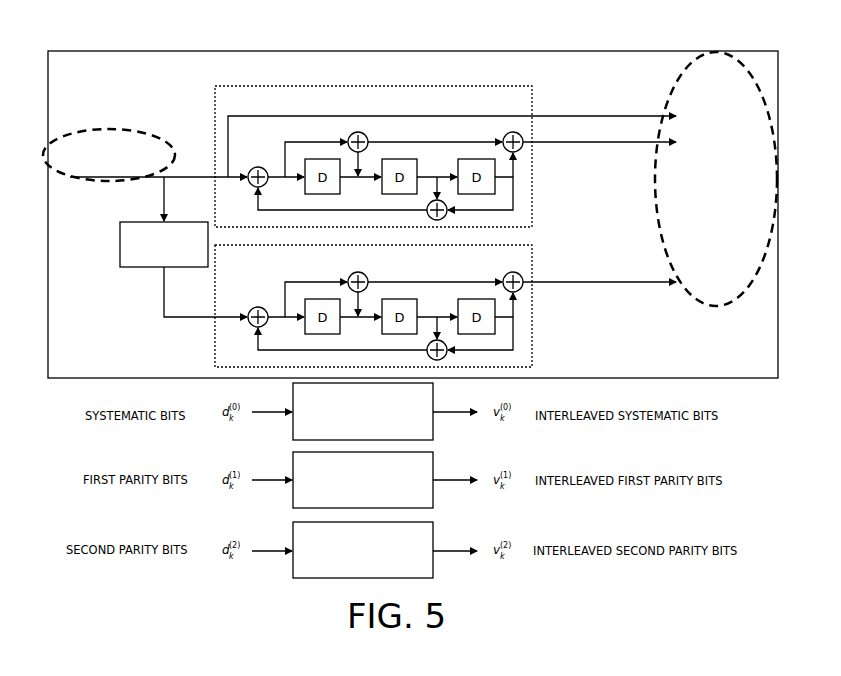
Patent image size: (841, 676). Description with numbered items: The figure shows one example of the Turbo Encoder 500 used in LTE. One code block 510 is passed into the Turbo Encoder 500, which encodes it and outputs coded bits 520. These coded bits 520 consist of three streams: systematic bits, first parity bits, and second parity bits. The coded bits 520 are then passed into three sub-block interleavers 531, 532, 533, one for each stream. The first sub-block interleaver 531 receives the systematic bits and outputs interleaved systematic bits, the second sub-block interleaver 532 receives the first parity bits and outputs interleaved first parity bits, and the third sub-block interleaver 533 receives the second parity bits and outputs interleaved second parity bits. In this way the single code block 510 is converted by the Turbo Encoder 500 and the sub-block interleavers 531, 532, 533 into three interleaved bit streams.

The Turbo Encoder 500 is at (500, 51).
The code block 510 is at (105, 124).
The coded bits 520 is at (707, 52).
The sub-block interleaver 531 is at (433, 428).
The sub-block interleaver 532 is at (433, 496).
The sub-block interleaver 533 is at (433, 566).